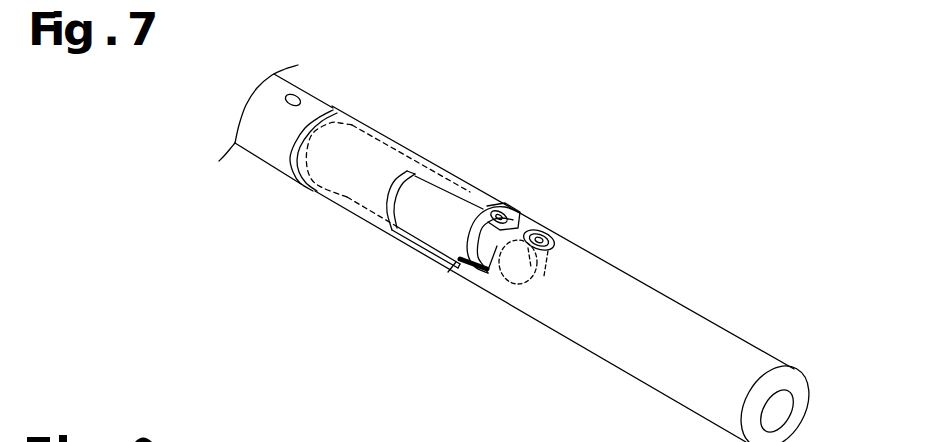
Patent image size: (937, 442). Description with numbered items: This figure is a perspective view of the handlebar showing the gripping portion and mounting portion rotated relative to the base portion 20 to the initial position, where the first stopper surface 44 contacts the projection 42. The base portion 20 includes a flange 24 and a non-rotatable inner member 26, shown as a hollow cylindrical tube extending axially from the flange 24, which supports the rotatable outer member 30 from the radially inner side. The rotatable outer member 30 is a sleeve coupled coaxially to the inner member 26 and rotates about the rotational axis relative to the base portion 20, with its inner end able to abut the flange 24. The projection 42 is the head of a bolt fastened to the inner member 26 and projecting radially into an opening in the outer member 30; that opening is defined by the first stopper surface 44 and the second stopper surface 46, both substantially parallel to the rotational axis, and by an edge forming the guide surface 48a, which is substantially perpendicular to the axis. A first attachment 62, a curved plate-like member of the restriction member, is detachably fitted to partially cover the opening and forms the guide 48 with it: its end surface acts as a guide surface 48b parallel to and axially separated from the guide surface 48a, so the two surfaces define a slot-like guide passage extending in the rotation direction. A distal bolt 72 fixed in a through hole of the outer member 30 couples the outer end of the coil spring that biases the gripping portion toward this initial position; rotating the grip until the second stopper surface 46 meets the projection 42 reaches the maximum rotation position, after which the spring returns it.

The base portion 20 is at (280, 84).
The flange 24 is at (336, 109).
The non-rotatable inner member 26 is at (370, 138).
The rotatable outer member 30 is at (667, 313).
The first attachment 62 is at (450, 187).
The first stopper surface 44 is at (490, 205).
The projection 42 is at (505, 208).
The distal bolt 72 is at (548, 233).
The guide surface 48b is at (478, 231).
The guide 48 is at (448, 272).
The guide surface 48a is at (520, 248).
The second stopper surface 46 is at (488, 270).